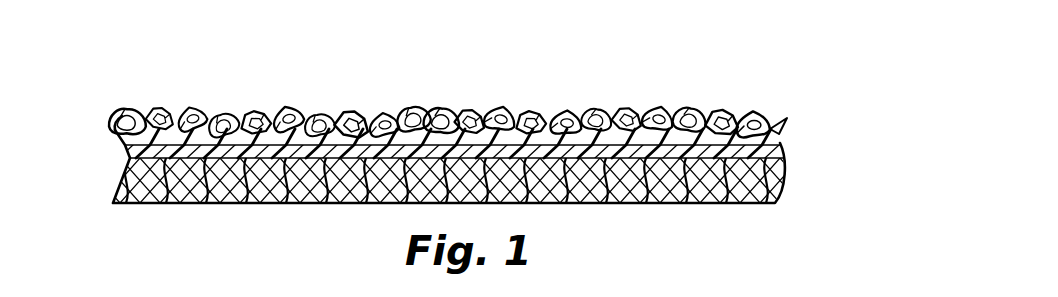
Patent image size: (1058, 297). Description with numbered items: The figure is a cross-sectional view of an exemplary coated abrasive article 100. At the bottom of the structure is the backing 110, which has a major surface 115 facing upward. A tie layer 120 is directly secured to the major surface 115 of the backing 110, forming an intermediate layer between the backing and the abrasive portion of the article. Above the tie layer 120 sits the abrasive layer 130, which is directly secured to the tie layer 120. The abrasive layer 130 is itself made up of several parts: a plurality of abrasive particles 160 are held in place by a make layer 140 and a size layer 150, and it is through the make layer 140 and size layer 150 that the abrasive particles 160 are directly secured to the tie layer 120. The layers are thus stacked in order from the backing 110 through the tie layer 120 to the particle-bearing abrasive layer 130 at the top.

The coated abrasive article 100 is at (697, 59).
The backing 110 is at (776, 190).
The major surface 115 is at (781, 174).
The tie layer 120 is at (783, 149).
The abrasive layer 130 is at (110, 113).
The make layer 140 is at (777, 133).
The size layer 150 is at (443, 110).
The abrasive particles 160 is at (566, 112).